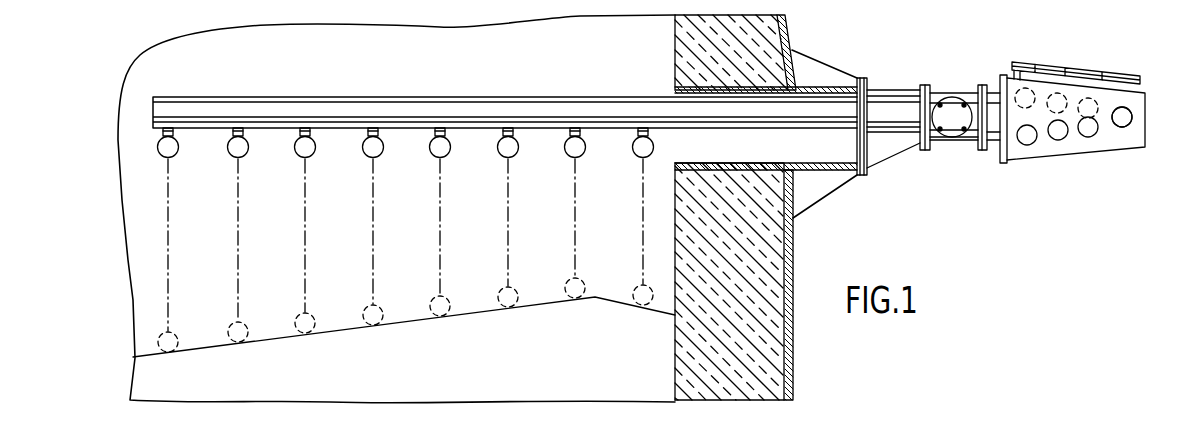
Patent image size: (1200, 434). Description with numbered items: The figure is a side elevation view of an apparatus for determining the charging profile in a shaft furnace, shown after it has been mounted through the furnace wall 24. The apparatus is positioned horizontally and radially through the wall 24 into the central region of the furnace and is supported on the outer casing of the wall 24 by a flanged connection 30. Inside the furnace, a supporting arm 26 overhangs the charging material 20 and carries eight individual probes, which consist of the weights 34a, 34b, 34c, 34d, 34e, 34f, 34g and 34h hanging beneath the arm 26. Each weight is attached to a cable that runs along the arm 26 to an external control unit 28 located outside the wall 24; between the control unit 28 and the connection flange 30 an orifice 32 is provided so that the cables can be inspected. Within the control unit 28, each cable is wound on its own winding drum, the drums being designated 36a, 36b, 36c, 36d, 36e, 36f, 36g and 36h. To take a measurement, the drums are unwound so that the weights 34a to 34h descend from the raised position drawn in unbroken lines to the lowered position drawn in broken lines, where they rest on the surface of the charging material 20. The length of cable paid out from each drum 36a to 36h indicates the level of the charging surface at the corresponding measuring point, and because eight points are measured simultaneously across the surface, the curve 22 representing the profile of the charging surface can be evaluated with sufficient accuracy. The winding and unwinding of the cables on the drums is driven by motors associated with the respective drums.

The charging material 20 is at (410, 385).
The curve representing the profile of the charging surface 22 is at (527, 307).
The wall 24 is at (790, 30).
The supporting arm 26 is at (427, 97).
The external control unit 28 is at (1000, 150).
The flanged connection 30 is at (861, 78).
The orifice 32 is at (945, 100).
The weight 34a is at (177, 152).
The weight 34b is at (247, 152).
The weight 34c is at (314, 153).
The weight 34d is at (382, 153).
The weight 34e is at (449, 153).
The weight 34f is at (517, 153).
The weight 34g is at (584, 153).
The weight 34h is at (654, 147).
The winding drum 36a is at (1129, 110).
The winding drum 36b is at (1027, 145).
The winding drum 36c is at (1088, 99).
The winding drum 36d is at (1058, 140).
The winding drum 36e is at (1057, 93).
The winding drum 36f is at (1091, 137).
The winding drum 36g is at (1025, 88).
The winding drum 36h is at (1126, 127).